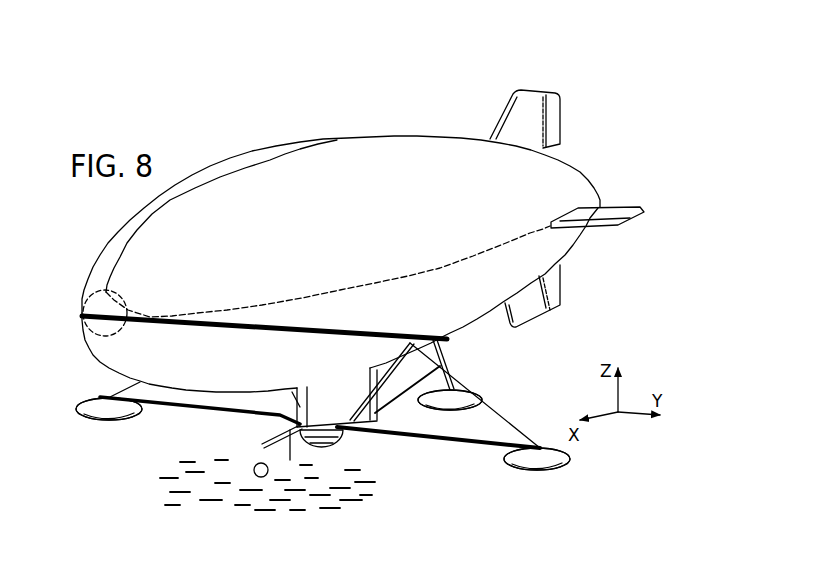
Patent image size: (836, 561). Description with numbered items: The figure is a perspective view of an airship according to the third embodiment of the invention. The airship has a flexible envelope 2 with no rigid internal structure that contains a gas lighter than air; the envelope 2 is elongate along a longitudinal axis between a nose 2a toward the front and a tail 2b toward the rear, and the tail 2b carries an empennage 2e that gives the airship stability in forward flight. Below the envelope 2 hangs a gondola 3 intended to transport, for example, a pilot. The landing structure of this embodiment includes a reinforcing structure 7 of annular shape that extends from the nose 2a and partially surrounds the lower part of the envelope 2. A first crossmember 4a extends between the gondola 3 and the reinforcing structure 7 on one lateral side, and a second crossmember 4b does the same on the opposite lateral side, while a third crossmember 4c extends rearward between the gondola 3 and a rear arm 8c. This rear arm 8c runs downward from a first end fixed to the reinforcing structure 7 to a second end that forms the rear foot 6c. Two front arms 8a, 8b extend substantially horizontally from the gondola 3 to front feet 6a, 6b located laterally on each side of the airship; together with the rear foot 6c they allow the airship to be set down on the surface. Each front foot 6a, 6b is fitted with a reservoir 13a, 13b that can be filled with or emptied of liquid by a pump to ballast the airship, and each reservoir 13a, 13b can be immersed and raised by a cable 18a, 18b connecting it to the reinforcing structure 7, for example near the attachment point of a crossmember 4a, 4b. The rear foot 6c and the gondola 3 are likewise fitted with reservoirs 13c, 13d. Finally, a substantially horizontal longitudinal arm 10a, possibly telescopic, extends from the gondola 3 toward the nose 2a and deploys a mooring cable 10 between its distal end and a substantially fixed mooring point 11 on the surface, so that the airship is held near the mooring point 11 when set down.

The flexible envelope 2 is at (433, 150).
The nose 2a is at (97, 308).
The tail 2b is at (567, 180).
The empennage 2e is at (530, 107).
The gondola 3 is at (312, 409).
The first crossmember 4a is at (368, 421).
The second crossmember 4b is at (247, 410).
The third crossmember 4c is at (398, 407).
The front foot 6a is at (555, 474).
The front foot 6b is at (85, 424).
The rear foot 6c is at (477, 383).
The reinforcing structure 7 is at (157, 320).
The front arm 8a is at (443, 440).
The front arm 8b is at (180, 410).
The rear arm 8c is at (446, 383).
The mooring cable 10 is at (258, 460).
The longitudinal arm 10a is at (291, 457).
The mooring point 11 is at (263, 477).
The reservoir 13a is at (527, 466).
The reservoir 13b is at (82, 402).
The reservoir 13c is at (470, 393).
The reservoir 13d is at (347, 437).
The cable 18a is at (502, 418).
The cable 18b is at (117, 395).